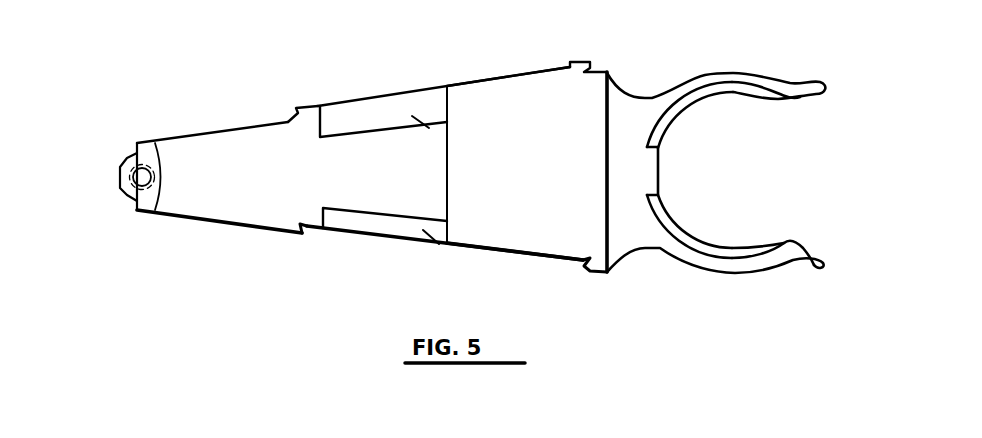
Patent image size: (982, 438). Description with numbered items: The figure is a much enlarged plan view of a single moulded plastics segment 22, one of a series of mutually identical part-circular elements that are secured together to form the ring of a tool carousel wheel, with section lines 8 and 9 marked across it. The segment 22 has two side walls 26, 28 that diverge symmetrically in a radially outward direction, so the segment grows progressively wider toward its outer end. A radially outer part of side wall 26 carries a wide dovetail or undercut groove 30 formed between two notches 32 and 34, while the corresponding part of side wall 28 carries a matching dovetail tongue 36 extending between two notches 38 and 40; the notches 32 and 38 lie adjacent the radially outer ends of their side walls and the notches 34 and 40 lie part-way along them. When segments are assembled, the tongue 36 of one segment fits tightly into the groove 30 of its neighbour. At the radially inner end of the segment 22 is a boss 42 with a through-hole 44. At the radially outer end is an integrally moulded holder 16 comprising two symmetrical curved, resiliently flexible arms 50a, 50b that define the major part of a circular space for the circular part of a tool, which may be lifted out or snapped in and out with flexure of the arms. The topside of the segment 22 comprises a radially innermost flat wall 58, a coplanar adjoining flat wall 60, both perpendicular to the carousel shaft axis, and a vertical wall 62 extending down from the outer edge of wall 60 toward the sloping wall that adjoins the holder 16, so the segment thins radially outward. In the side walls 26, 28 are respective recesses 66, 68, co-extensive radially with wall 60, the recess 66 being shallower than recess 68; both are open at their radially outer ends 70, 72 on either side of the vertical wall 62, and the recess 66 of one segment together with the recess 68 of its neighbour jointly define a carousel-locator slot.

The section line 8- 8 is at (148, 177).
The section line 9- 9 is at (733, 102).
The holder 16 is at (678, 223).
The segment 22 is at (227, 262).
The side wall 26 is at (385, 254).
The side wall 28 is at (382, 97).
The groove 30 is at (408, 236).
The notch 32 is at (584, 265).
The notch 34 is at (313, 234).
The tongue 36 is at (418, 92).
The notch 38 is at (598, 63).
The notch 40 is at (296, 108).
The boss 42 is at (153, 210).
The through-hole 44 is at (146, 146).
The arm 50a is at (777, 244).
The arm 50b is at (713, 91).
The flat wall 58 is at (226, 190).
The flat wall 60 is at (393, 188).
The vertical wall 62 is at (449, 176).
The recess 66 is at (439, 246).
The recess 68 is at (431, 128).
The radially outer end 70 is at (449, 230).
The radially outer end 72 is at (449, 111).